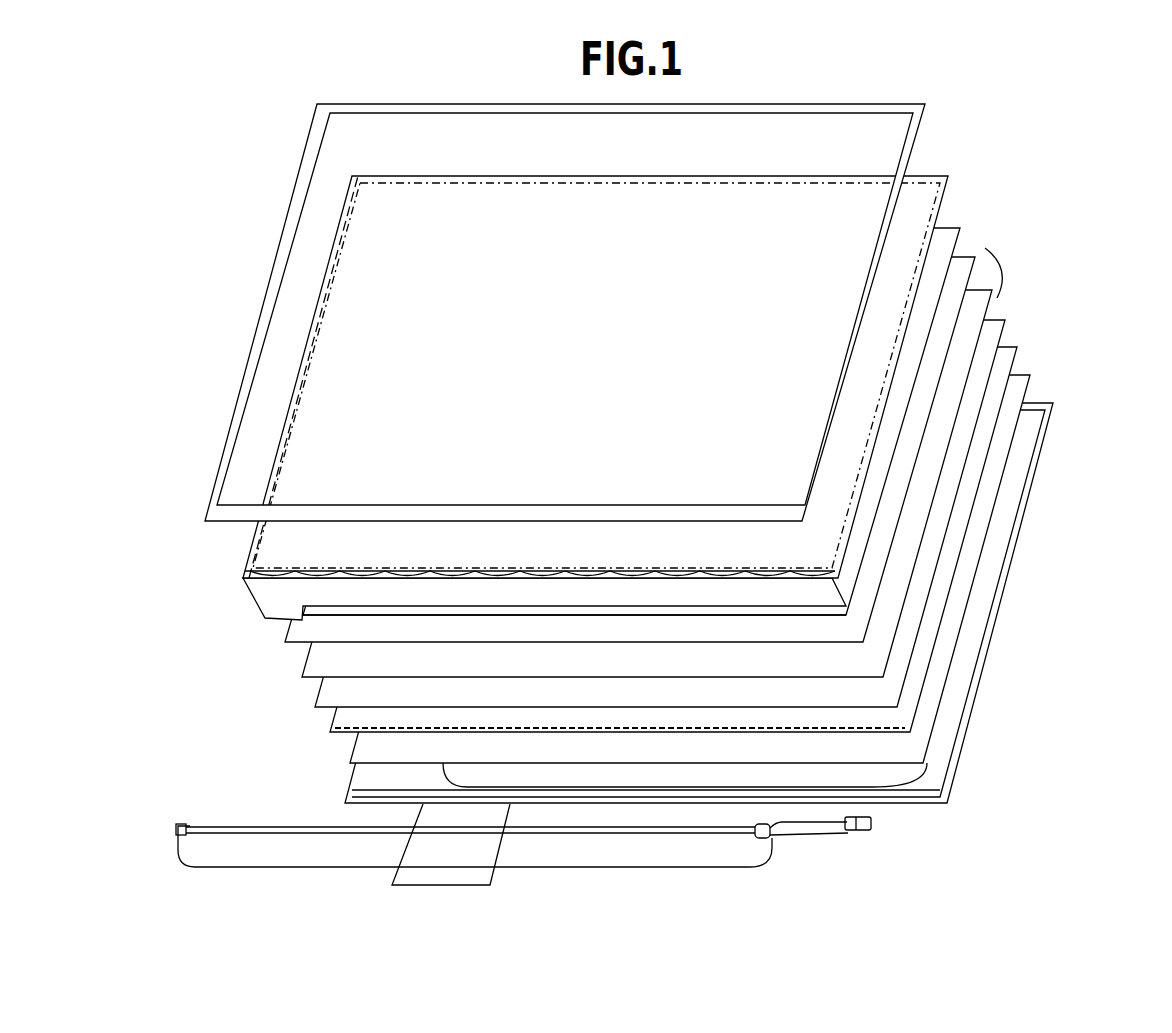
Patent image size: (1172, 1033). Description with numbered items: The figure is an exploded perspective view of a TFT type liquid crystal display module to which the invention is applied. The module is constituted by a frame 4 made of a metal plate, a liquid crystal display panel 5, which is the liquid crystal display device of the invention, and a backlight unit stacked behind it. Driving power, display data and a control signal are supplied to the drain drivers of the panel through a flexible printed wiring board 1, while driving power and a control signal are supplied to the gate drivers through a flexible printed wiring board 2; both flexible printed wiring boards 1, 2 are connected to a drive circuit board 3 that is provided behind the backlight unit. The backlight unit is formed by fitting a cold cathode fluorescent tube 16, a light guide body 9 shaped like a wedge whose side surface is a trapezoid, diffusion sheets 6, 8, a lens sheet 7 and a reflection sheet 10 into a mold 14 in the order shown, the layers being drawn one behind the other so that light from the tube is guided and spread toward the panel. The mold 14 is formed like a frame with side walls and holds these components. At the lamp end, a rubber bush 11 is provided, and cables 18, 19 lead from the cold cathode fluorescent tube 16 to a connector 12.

The flexible printed wiring board 1 is at (247, 607).
The flexible printed wiring board 2 is at (519, 400).
The drive circuit board 3 is at (410, 817).
The frame 4 is at (232, 405).
The liquid crystal display panel 5 is at (325, 447).
The diffusion sheet 6 is at (962, 232).
The lens sheet 7 is at (1003, 268).
The diffusion sheet 8 is at (1018, 320).
The light guide body 9 is at (1023, 349).
The reflection sheet 10 is at (1035, 377).
The rubber bush 11 is at (772, 834).
The connector 12 is at (875, 826).
The mold 14 is at (1047, 453).
The cold cathode fluorescent tube 16 is at (688, 835).
The cable 18 is at (787, 838).
The cable 19 is at (636, 866).